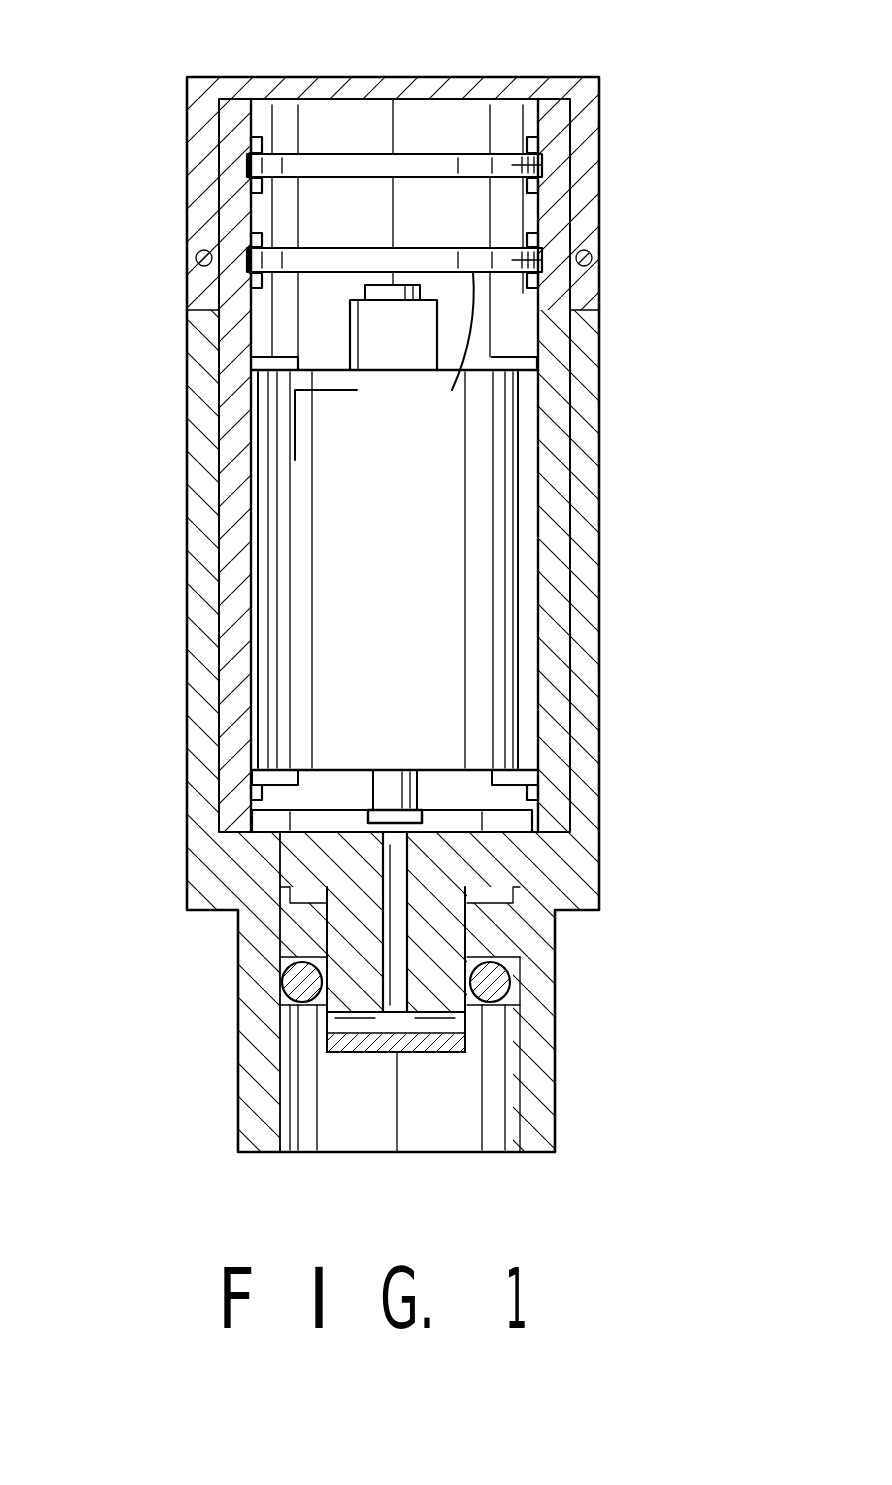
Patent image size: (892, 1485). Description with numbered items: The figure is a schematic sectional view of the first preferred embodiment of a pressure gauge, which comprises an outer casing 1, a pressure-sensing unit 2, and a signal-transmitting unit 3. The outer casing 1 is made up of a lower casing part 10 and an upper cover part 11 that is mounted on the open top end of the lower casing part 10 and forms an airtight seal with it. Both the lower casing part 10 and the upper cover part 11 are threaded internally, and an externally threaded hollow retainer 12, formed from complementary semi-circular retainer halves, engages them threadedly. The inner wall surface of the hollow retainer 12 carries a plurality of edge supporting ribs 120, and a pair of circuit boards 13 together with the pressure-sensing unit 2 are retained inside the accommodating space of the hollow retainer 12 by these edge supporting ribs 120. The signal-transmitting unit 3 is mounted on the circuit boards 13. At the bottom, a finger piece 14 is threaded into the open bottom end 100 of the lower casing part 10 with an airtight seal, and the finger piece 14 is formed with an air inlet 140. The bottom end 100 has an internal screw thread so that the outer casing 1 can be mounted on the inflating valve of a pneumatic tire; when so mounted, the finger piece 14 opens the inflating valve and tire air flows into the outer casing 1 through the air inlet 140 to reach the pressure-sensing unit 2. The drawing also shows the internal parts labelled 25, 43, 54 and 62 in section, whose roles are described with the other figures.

The outer casing 1 is at (668, 359).
The pressure-sensing unit 2 is at (258, 572).
The signal-transmitting unit 3 is at (427, 129).
The lower casing part 10 is at (583, 540).
The upper cover part 11 is at (490, 90).
The hollow retainer 12 is at (242, 393).
The circuit boards 13 is at (362, 260).
The finger piece 14 is at (350, 998).
The bracket 25 is at (293, 437).
The wire 43 is at (470, 348).
The bottom plate 54 is at (533, 802).
The motor 62 is at (387, 332).
The open bottom end 100 is at (327, 1117).
The edge supporting ribs 120 is at (259, 136).
The air inlet 140 is at (357, 1028).